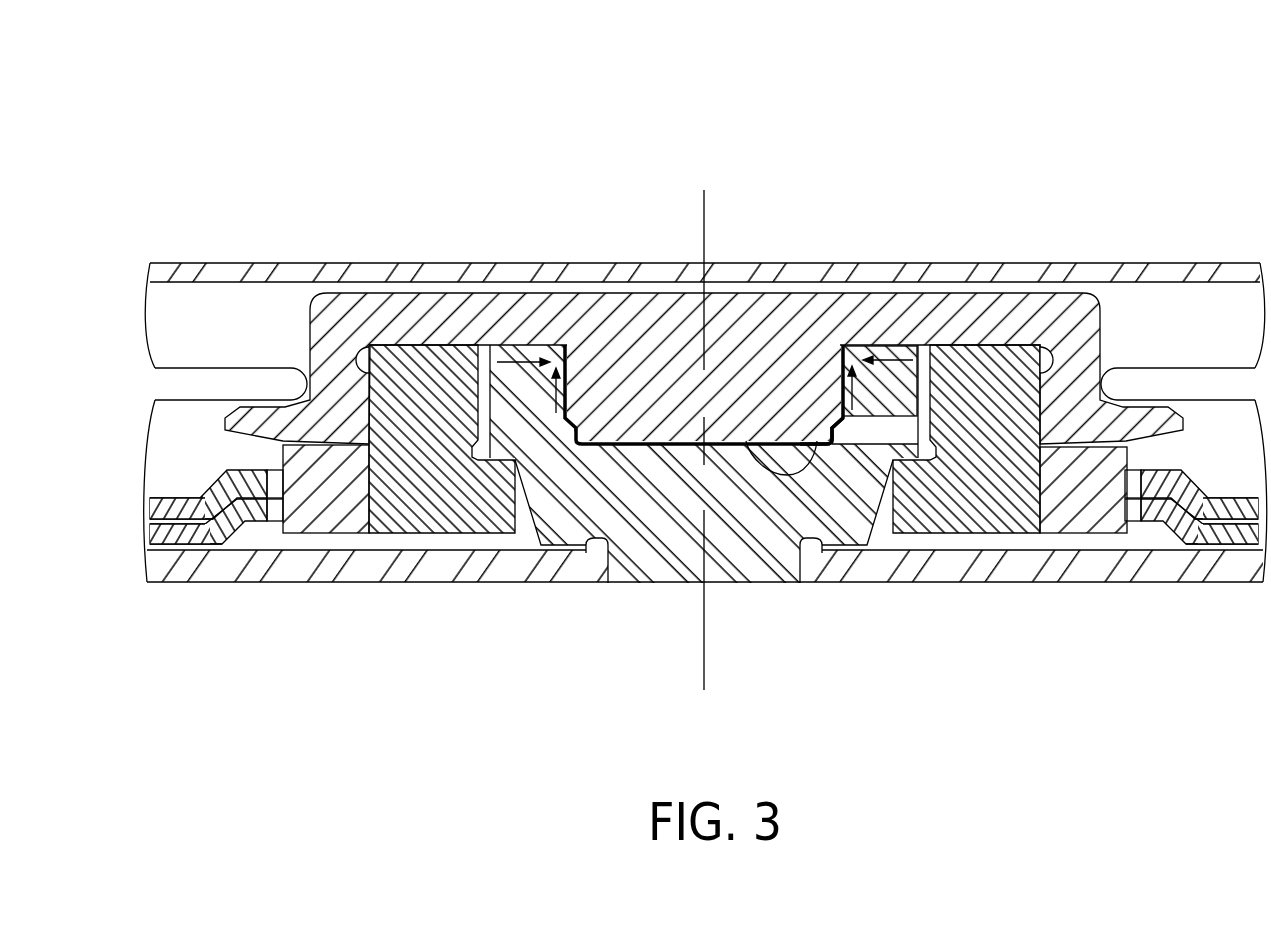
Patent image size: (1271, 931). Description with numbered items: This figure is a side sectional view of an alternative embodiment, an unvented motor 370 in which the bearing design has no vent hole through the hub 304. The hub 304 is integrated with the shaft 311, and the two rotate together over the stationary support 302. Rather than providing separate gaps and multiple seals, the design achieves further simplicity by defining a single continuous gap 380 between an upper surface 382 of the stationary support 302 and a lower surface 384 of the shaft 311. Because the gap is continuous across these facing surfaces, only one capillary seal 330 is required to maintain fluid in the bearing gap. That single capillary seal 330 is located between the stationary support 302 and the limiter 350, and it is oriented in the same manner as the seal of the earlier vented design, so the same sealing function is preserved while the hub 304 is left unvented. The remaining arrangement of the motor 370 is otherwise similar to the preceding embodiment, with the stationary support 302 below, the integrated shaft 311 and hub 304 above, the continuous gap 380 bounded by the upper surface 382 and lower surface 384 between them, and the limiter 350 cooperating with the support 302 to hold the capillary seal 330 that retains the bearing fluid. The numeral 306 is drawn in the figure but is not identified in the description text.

The motor 370 is at (683, 48).
The stationary support 302 is at (733, 543).
The hub 304 is at (397, 313).
The spacer block 306 is at (888, 433).
The shaft 311 is at (600, 400).
The capillary seal 330 is at (525, 503).
The limiter 350 is at (440, 513).
The continuous gap 380 is at (660, 443).
The upper surface 382 is at (817, 441).
The lower surface 384 is at (746, 441).